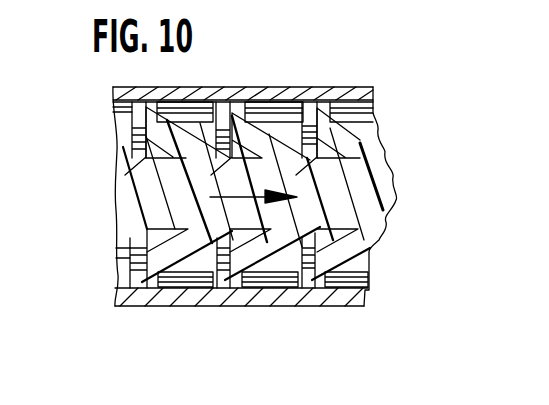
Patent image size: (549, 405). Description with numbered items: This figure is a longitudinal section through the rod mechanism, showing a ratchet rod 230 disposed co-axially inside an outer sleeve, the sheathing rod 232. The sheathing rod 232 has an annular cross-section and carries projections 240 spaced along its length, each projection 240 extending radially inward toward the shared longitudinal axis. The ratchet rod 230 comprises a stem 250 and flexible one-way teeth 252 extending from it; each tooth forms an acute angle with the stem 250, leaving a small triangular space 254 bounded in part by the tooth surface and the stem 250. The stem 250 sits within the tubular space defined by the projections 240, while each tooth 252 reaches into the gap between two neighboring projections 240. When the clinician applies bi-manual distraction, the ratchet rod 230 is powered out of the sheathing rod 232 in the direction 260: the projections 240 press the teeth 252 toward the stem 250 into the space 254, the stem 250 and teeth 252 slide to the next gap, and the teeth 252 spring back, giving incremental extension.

The ratchet rod 230 is at (368, 210).
The sheathing rod 232 is at (318, 93).
The projections 240 is at (222, 118).
The stem 250 is at (175, 183).
The one-way teeth 252 is at (166, 257).
The small triangular space 254 is at (283, 275).
The direction 260 is at (297, 270).